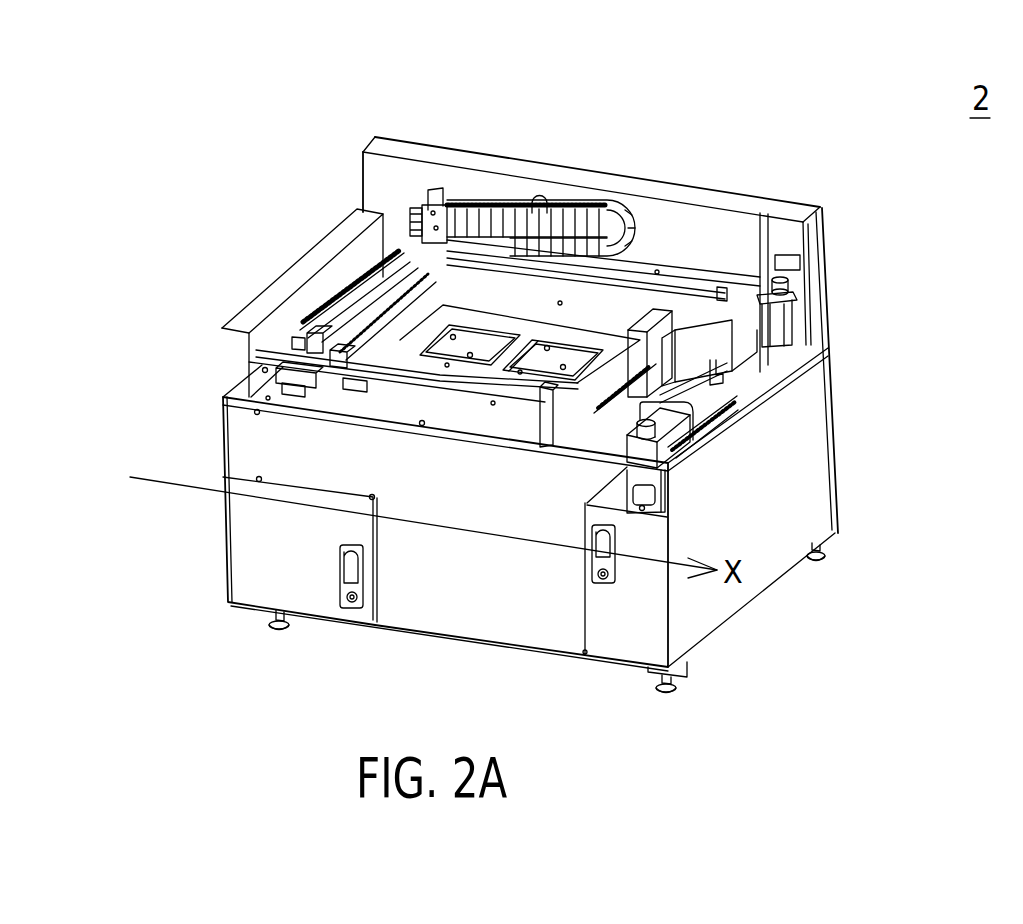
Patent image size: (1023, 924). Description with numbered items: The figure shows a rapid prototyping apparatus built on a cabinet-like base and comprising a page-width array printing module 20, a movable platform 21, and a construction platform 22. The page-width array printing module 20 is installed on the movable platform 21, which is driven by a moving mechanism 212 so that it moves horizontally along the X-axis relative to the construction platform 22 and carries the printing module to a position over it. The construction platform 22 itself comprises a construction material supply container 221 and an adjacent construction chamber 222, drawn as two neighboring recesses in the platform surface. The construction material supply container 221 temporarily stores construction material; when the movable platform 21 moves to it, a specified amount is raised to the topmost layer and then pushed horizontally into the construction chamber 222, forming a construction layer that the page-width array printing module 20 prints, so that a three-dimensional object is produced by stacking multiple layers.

The page-width array printing module 20 is at (378, 300).
The movable platform 21 is at (437, 300).
The moving mechanism 212 is at (500, 200).
The construction platform 22 is at (583, 330).
The construction material supply container 221 is at (472, 360).
The construction chamber 222 is at (565, 368).